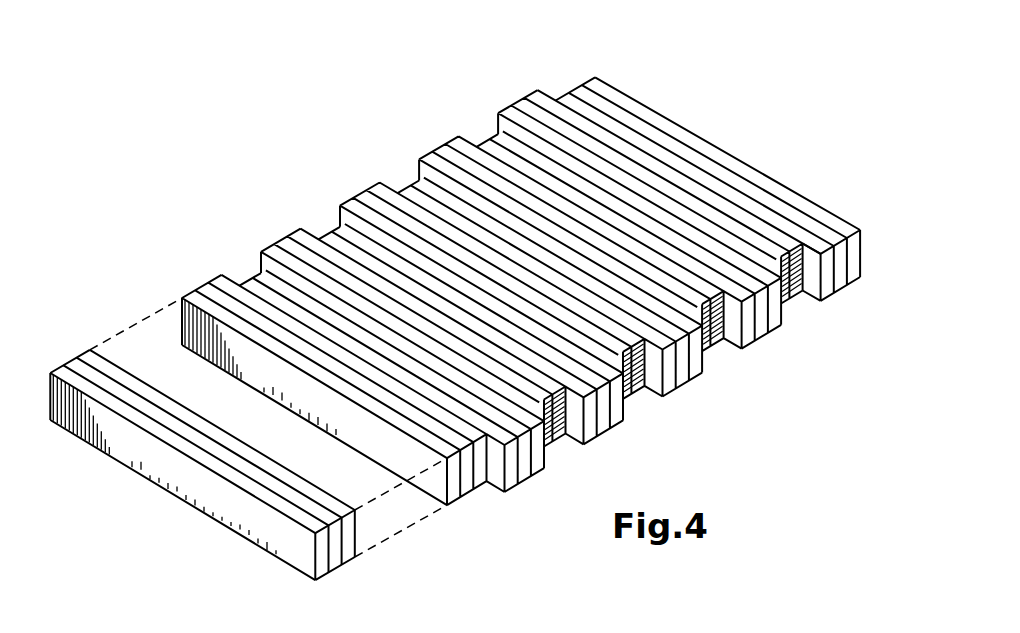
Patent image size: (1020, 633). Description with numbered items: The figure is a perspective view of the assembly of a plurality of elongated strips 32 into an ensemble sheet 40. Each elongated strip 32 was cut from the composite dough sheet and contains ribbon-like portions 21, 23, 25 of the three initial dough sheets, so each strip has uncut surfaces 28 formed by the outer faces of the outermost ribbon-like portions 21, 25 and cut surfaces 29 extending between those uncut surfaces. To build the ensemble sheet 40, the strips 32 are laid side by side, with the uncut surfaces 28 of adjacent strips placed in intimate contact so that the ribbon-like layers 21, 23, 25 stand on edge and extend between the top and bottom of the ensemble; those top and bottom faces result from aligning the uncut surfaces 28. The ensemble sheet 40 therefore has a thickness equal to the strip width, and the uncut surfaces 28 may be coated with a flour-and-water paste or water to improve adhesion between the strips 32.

The ensemble sheet 40 is at (368, 98).
The ribbon-like portion 21 is at (582, 77).
The ribbon-like portion 23 is at (572, 85).
The ribbon-like portion 25 is at (557, 90).
The uncut surface 28 is at (177, 478).
The cut surface 29 is at (707, 167).
The elongated strip 32 is at (358, 188).